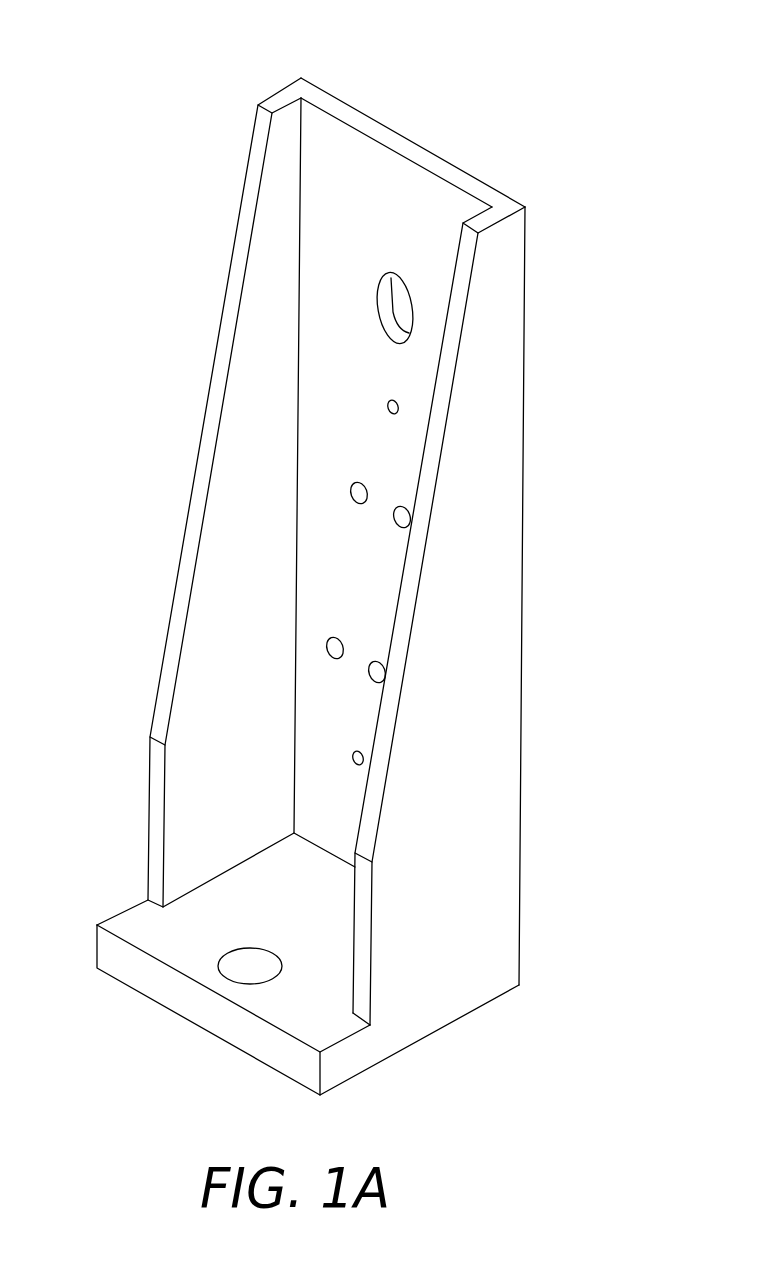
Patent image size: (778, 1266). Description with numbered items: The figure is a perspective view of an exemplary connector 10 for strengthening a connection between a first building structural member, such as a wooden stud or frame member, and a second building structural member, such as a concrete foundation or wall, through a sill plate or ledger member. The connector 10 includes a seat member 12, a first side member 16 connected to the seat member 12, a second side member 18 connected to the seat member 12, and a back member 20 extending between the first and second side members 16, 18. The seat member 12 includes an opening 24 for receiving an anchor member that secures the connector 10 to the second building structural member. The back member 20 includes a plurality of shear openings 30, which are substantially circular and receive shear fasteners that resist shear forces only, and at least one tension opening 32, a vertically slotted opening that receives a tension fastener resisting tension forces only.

The connector 10 is at (538, 148).
The seat member 12 is at (138, 923).
The first side member 16 is at (242, 470).
The second side member 18 is at (483, 760).
The back member 20 is at (393, 190).
The opening 24 is at (255, 962).
The shear openings 30 is at (363, 490).
The tension opening 32 is at (378, 296).